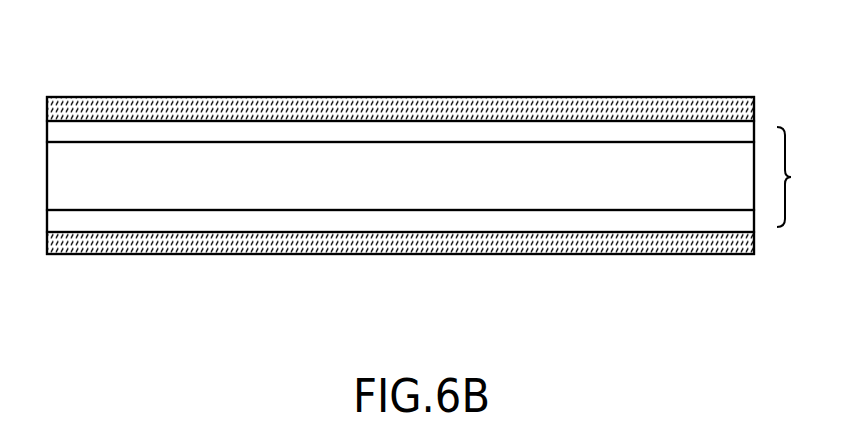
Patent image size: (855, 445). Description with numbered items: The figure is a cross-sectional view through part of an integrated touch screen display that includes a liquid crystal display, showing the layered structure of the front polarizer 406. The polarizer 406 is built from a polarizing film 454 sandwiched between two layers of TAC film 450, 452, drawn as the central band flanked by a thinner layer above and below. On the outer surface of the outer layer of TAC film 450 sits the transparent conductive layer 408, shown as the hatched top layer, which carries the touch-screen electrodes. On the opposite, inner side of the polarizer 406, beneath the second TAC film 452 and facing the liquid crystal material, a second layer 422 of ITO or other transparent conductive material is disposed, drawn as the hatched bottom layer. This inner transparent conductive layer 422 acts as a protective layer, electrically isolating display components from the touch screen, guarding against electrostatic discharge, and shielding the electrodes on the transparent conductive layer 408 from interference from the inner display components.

The front polarizer 406 is at (790, 178).
The transparent conductive layer 408 is at (250, 105).
The outer layer of TAC film 450 is at (405, 127).
The polarizing film 454 is at (414, 189).
The TAC film 452 is at (403, 221).
The inner transparent conductive layer 422 is at (255, 245).